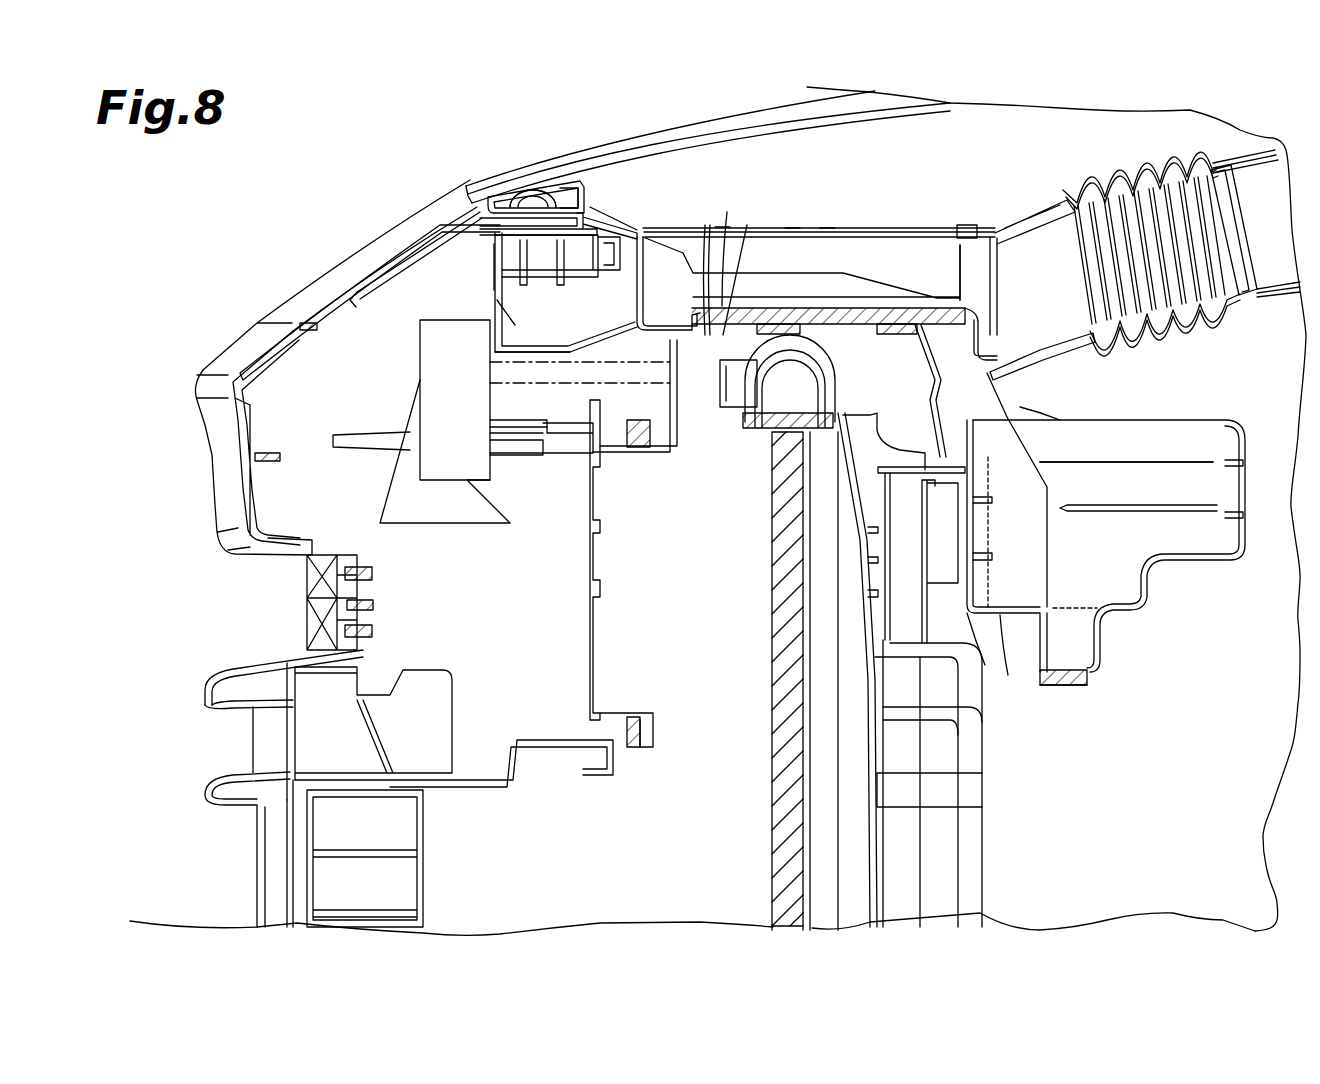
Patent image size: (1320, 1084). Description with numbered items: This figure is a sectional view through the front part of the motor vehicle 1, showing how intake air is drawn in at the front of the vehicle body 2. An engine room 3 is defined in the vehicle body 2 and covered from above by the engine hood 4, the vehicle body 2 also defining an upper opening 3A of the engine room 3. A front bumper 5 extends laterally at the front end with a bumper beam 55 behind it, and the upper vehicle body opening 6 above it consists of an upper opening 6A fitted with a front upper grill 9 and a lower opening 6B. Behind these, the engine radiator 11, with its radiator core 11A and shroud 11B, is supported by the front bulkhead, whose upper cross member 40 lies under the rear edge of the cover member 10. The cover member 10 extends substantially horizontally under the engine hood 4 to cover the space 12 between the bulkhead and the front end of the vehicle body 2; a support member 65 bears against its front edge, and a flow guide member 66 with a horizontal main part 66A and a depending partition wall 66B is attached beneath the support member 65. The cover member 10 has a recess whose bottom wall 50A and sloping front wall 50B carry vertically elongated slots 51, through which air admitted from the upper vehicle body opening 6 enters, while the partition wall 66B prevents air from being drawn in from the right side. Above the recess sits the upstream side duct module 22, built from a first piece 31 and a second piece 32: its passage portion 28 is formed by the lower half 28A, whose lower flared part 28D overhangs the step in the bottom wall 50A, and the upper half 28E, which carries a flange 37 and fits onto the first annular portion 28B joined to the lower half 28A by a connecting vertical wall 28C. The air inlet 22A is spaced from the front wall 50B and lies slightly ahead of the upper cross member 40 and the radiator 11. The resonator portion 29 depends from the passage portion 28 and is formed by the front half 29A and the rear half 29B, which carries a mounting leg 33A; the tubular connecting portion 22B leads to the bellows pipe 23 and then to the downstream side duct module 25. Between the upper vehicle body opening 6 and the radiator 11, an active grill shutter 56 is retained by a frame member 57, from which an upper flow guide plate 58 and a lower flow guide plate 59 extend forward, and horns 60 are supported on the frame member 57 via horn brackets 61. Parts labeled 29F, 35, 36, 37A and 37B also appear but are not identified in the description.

The motor vehicle 1 is at (338, 135).
The vehicle body 2 is at (290, 302).
The engine room 3 is at (985, 141).
The upper opening 3A is at (468, 185).
The engine hood 4 is at (787, 120).
The front bumper 5 is at (257, 860).
The upper vehicle body opening 6 is at (138, 660).
The upper opening 6A is at (243, 662).
The lower opening 6B is at (242, 705).
The front upper grill 9 is at (307, 612).
The cover member 10 is at (557, 175).
The engine radiator 11 is at (772, 783).
The radiator core 11A is at (783, 924).
The shroud 11B is at (938, 893).
The space 12 is at (508, 618).
The upstream side duct module 22 is at (908, 226).
The air inlet 22A is at (727, 226).
The tubular connecting portion 22B is at (1040, 238).
The bellows pipe 23 is at (1120, 172).
The downstream side duct module 25 is at (1268, 140).
The passage portion 28 is at (845, 230).
The lower half 28A is at (733, 330).
The first annular portion 28B is at (987, 224).
The connecting vertical wall 28C is at (985, 340).
The lower flared part 28D is at (690, 250).
The upper half 28E is at (828, 225).
The resonator portion 29 is at (1102, 675).
The front half 29A is at (990, 617).
The rear half 29B is at (1200, 420).
The bracket flange 29F is at (1055, 358).
The first piece 31 is at (787, 228).
The second piece 32 is at (1023, 613).
The mounting leg 33A is at (1063, 687).
The housing 35 is at (1112, 551).
The cushion 36 is at (1053, 405).
The flange 37 is at (676, 82).
The fastener head 37A is at (598, 207).
The fastener body 37B is at (660, 220).
The upper cross member 40 is at (852, 410).
The bottom wall 50A is at (752, 378).
The front wall 50B is at (693, 338).
The slots 51 is at (637, 278).
The bumper beam 55 is at (425, 850).
The active grill shutter 56 is at (600, 612).
The frame member 57 is at (642, 450).
The upper flow guide plate 58 is at (355, 450).
The lower flow guide plate 59 is at (500, 772).
The horns 60 is at (425, 360).
The horn brackets 61 is at (557, 400).
The support member 65 is at (460, 223).
The flow guide member 66 is at (490, 245).
The main part 66A is at (490, 284).
The partition wall 66B is at (517, 323).